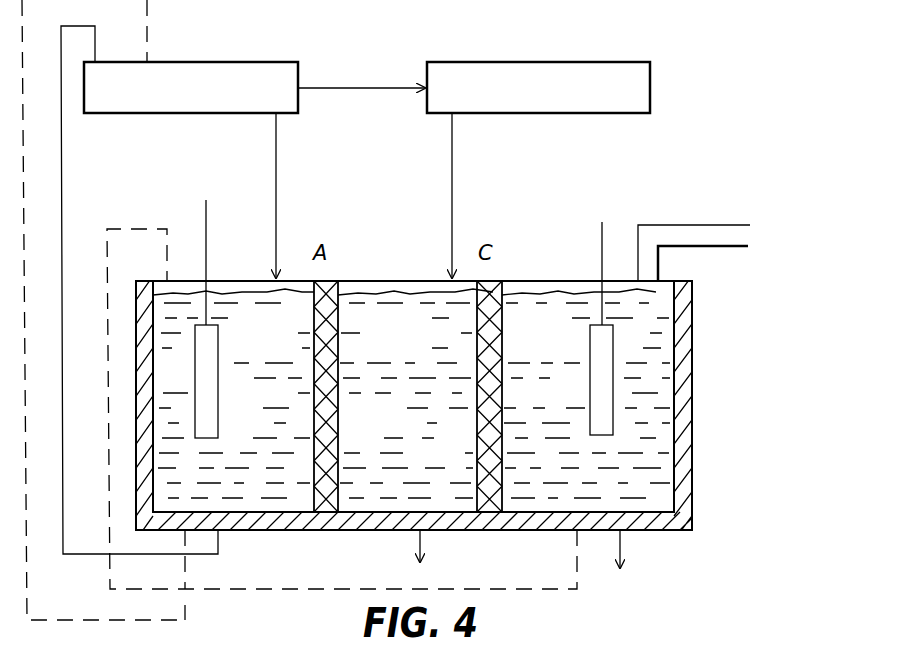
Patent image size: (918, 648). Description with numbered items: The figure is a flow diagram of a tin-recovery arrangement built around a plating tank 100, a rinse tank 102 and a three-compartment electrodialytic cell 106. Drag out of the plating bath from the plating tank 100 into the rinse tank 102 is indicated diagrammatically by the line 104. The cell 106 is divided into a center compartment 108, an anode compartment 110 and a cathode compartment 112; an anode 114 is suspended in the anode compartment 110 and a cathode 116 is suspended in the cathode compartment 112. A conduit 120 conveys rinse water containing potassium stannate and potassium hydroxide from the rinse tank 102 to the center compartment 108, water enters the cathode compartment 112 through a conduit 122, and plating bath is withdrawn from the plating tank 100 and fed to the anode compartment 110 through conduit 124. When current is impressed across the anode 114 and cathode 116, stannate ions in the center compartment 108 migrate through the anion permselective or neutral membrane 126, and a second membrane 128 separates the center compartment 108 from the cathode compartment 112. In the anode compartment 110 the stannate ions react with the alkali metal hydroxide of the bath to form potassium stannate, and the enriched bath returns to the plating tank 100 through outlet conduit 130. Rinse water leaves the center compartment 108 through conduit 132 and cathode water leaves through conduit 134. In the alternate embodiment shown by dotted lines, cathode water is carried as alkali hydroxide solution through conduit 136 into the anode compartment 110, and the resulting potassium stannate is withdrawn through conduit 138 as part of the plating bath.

The plating tank 100 is at (196, 61).
The rinse tank 102 is at (501, 60).
The line 104 is at (342, 88).
The electrodialytic cell 106 is at (707, 506).
The center compartment 108 is at (420, 343).
The anode compartment 110 is at (280, 343).
The cathode compartment 112 is at (554, 343).
The anode 114 is at (218, 424).
The cathode 116 is at (590, 380).
The conduit 120 is at (452, 202).
The conduit 122 is at (681, 223).
The conduit 124 is at (276, 201).
The anion permselective membrane or neutral membrane 126 is at (338, 447).
The ion exchange membrane 128 is at (477, 412).
The outlet conduit 130 is at (218, 540).
The conduit 132 is at (415, 537).
The conduit 134 is at (628, 536).
The conduit 136 is at (577, 554).
The conduit 138 is at (187, 607).